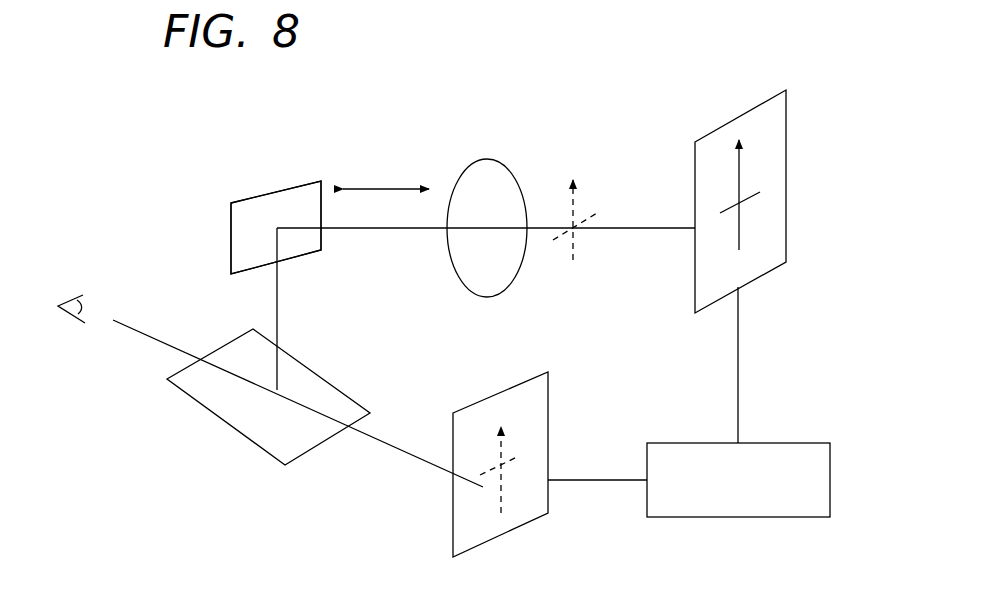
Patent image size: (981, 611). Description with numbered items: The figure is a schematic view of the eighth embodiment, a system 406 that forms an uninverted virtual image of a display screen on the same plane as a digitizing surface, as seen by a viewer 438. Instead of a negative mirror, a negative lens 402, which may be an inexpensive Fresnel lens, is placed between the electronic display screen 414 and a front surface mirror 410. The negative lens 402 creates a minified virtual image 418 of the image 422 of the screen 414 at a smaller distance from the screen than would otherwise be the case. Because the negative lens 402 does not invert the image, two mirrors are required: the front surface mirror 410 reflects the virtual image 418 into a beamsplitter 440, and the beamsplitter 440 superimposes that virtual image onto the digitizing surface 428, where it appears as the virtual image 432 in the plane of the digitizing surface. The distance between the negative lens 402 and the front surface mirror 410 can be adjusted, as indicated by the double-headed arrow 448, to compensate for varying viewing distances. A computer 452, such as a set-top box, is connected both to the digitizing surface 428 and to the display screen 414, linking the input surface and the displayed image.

The negative lens 402 is at (487, 159).
The system 406 is at (205, 176).
The front surface mirror 410 is at (303, 255).
The display screen 414 is at (760, 277).
The virtual image 418 is at (573, 243).
The image 422 is at (740, 222).
The digitizing surface 428 is at (548, 392).
The virtual image 432 is at (500, 497).
The viewer 438 is at (73, 310).
The beamsplitter 440 is at (338, 388).
The double-headed arrow 448 is at (385, 189).
The computer 452 is at (738, 518).